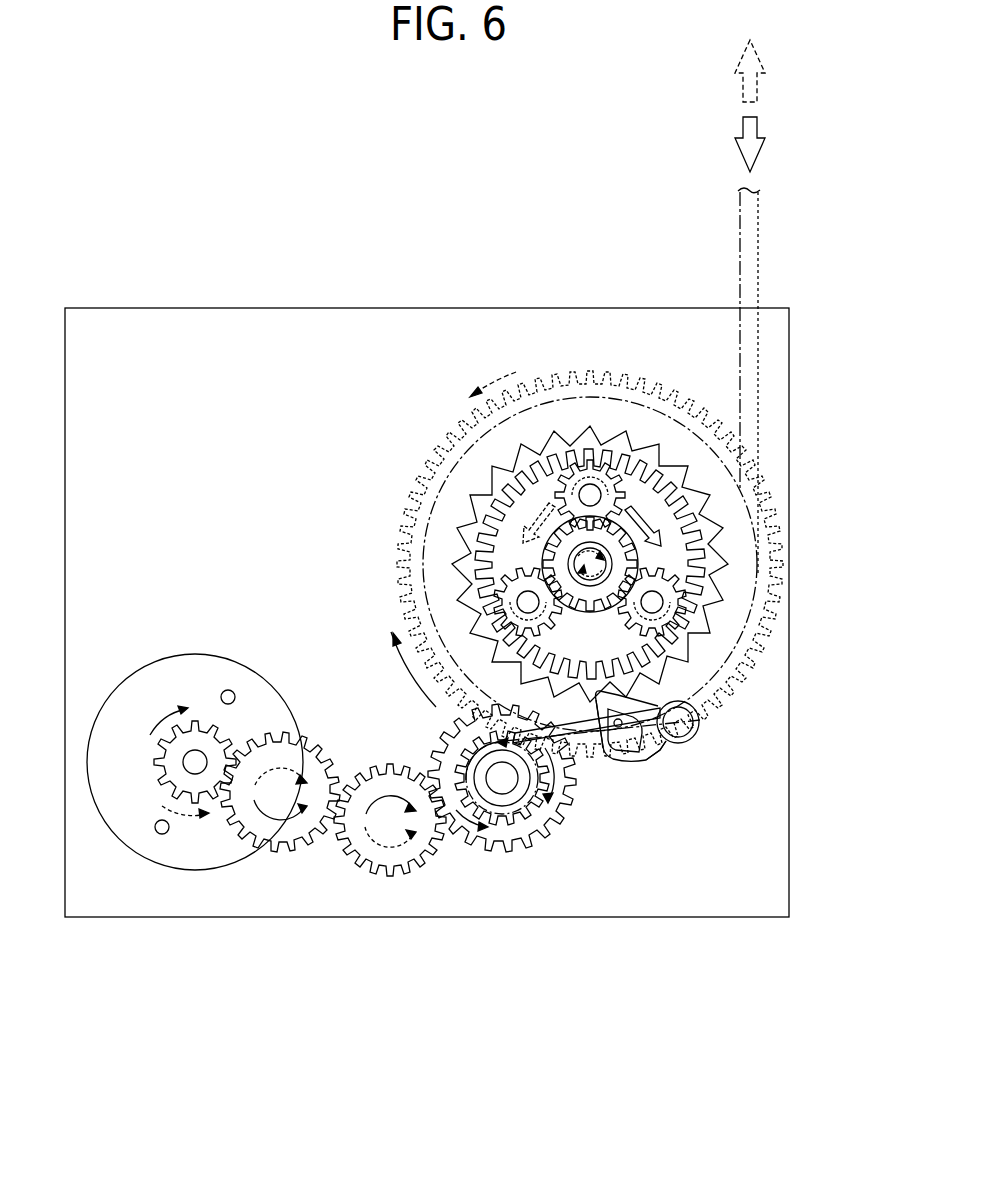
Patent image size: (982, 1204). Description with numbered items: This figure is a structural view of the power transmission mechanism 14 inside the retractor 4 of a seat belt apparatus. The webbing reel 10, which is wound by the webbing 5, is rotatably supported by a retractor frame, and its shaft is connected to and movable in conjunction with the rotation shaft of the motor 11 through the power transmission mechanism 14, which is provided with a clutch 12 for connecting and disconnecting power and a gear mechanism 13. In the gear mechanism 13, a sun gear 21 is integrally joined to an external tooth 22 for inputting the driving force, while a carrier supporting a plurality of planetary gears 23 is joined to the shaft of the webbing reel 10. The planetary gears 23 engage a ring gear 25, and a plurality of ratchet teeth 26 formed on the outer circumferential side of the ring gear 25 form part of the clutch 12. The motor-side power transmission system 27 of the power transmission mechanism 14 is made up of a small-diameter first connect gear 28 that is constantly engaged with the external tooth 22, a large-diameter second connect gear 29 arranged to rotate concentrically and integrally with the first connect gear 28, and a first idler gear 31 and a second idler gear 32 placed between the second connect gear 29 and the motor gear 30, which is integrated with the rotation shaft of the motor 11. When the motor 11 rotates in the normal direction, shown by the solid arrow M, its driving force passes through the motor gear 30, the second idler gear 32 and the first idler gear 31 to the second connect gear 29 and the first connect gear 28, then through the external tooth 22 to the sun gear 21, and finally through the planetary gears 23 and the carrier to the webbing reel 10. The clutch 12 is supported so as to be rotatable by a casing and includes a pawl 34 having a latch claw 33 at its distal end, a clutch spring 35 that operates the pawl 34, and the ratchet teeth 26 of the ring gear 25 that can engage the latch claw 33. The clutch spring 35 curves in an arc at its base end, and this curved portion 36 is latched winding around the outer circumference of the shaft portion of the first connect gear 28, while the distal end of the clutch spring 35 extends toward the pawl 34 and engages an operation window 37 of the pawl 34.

The retractor 4 is at (185, 308).
The webbing 5 is at (760, 243).
The webbing reel 10 is at (770, 603).
The motor 11 is at (203, 847).
The clutch 12 is at (661, 764).
The gear mechanism 13 is at (690, 510).
The power transmission mechanism 14 is at (262, 430).
The sun gear 21 is at (545, 553).
The external tooth 22 is at (443, 437).
The planetary gear 23 is at (605, 470).
The ring gear 25 is at (713, 543).
The ratchet tooth 26 is at (677, 697).
The motor-side power transmission system 27 is at (322, 860).
The first connect gear 28 is at (495, 847).
The second connect gear 29 is at (462, 847).
The motor gear 30 is at (220, 735).
The first idler gear 31 is at (390, 850).
The second idler gear 32 is at (283, 847).
The latch claw 33 is at (603, 752).
The pawl 34 is at (677, 746).
The clutch spring 35 is at (583, 742).
The curved portion 36 is at (517, 847).
The operation window 37 is at (640, 762).